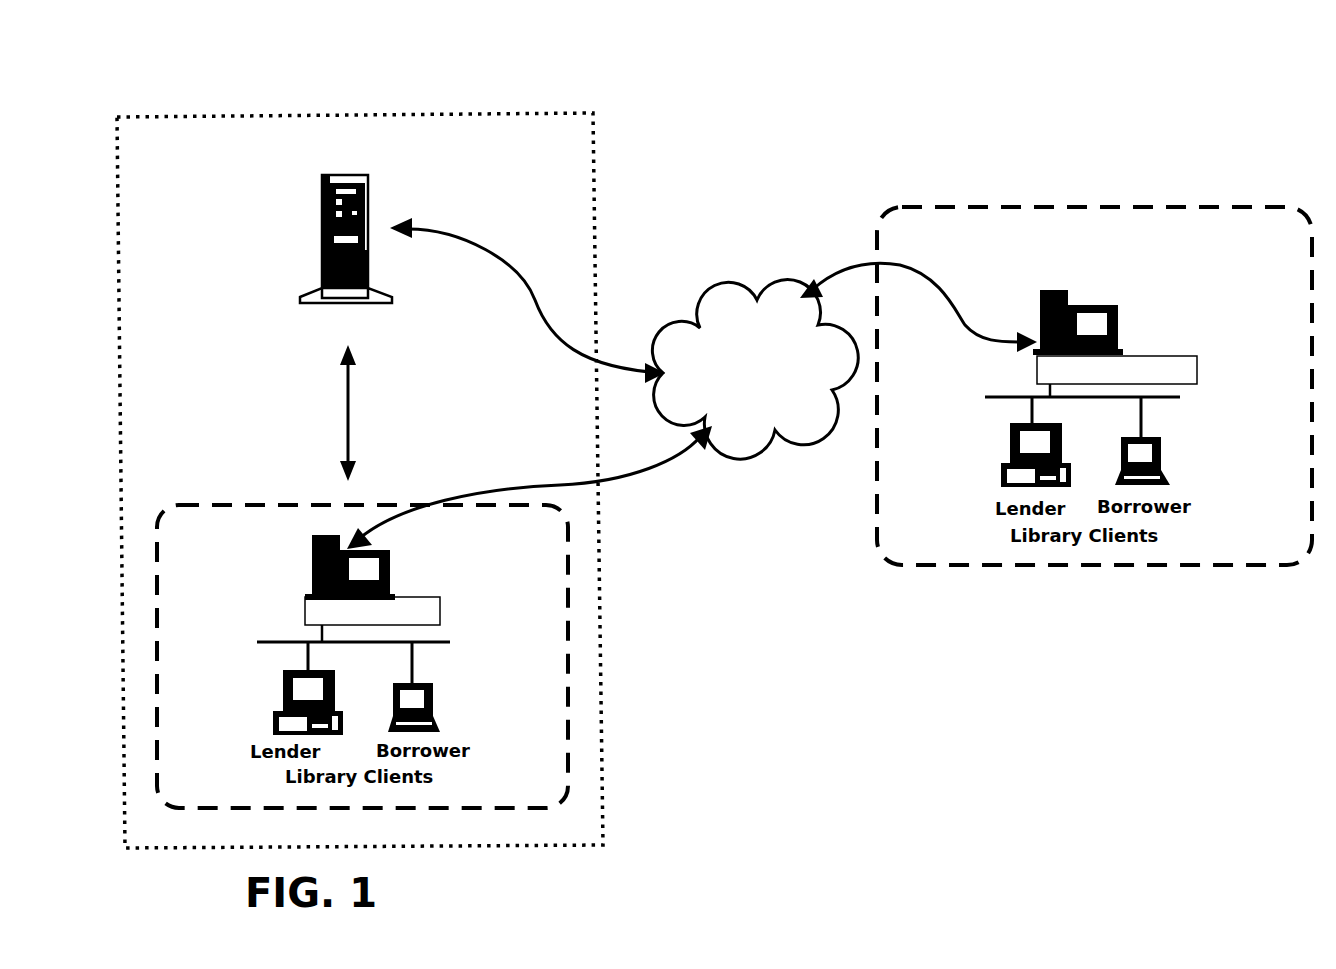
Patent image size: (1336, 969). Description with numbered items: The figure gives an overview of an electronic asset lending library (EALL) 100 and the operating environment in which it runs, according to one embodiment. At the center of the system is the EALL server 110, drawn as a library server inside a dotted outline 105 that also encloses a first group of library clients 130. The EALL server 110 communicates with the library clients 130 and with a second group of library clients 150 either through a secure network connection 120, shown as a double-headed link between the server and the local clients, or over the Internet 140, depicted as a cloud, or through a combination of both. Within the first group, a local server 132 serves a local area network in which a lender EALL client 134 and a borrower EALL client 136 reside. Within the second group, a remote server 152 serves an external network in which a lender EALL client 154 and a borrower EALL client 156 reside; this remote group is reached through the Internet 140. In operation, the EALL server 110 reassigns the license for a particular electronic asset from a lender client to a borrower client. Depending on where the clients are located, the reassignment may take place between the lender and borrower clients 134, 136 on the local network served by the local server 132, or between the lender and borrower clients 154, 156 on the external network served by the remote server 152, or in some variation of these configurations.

The electronic asset lending library system 100 is at (890, 60).
The library 105 is at (360, 460).
The EALL server 110 is at (391, 258).
The secure network connection 120 is at (415, 413).
The library clients 130 is at (362, 624).
The local server 132 is at (419, 584).
The lender EALL client 134 is at (255, 694).
The borrower EALL client 136 is at (466, 702).
The Internet 140 is at (736, 337).
The library clients 150 is at (1094, 343).
The remote server 152 is at (1148, 336).
The lender EALL client 154 is at (984, 452).
The borrower EALL client 156 is at (1201, 452).